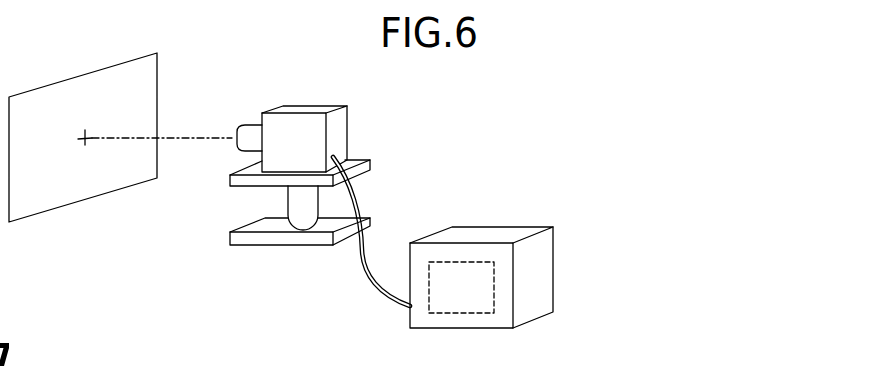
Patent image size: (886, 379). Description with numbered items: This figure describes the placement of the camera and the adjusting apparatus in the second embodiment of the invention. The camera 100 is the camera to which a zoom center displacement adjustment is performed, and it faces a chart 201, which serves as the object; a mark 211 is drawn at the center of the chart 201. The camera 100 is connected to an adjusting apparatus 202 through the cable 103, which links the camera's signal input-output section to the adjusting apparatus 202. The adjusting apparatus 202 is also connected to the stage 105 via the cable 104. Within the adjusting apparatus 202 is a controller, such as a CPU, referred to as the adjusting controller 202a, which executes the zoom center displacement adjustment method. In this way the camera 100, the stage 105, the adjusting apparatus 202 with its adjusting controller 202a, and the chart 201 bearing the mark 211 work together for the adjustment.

The camera 100 is at (310, 107).
The cable 103 is at (355, 197).
The cable 104 is at (368, 280).
The stage 105 is at (230, 180).
The chart 201 is at (96, 72).
The adjusting apparatus 202 is at (488, 232).
The adjusting controller 202a is at (459, 307).
The mark 211 is at (86, 137).